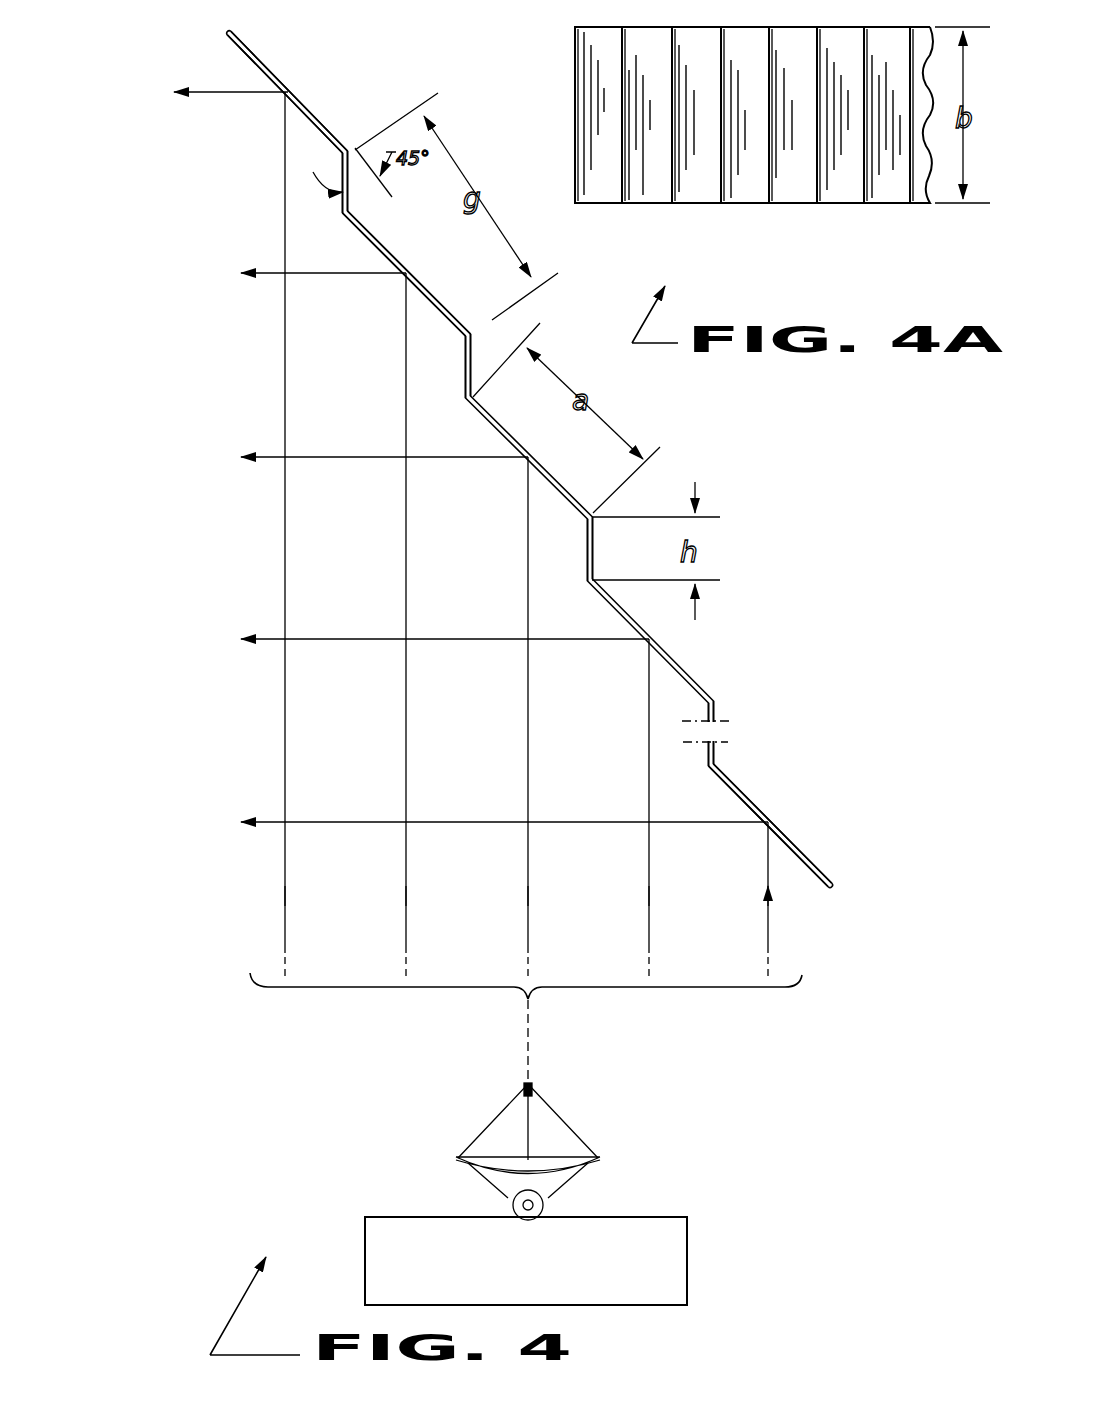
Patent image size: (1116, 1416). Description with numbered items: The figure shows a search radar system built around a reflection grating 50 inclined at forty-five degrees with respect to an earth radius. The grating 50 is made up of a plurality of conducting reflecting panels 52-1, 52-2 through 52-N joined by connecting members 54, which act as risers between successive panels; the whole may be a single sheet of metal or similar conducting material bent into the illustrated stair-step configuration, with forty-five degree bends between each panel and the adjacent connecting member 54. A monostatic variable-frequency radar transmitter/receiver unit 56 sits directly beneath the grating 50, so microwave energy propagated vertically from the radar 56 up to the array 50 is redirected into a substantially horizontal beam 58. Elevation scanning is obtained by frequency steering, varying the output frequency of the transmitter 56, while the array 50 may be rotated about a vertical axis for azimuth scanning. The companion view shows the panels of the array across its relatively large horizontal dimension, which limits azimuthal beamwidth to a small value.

In FIG. 4, the grating 50 is at (542, 453).
In FIG. 4A, the grating 50 is at (776, 228).
In FIG. 4, the conducting reflecting panel 52-1 is at (275, 72).
In FIG. 4, the conducting reflecting panel 52-2 is at (381, 243).
In FIG. 4, the conducting reflecting panel 52-N is at (797, 851).
In FIG. 4, the connecting member 54 is at (466, 369).
In FIG. 4, the variable-frequency radar transmitter/receiver unit 56 is at (627, 1217).
In FIG. 4, the horizontal beam 58 is at (320, 639).